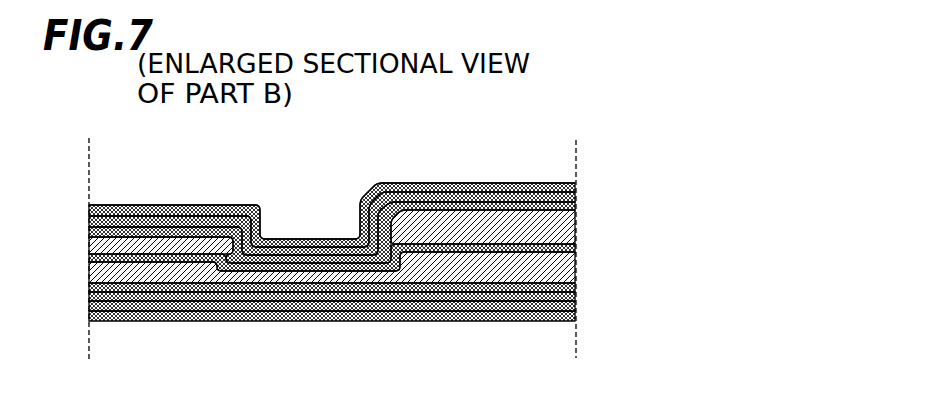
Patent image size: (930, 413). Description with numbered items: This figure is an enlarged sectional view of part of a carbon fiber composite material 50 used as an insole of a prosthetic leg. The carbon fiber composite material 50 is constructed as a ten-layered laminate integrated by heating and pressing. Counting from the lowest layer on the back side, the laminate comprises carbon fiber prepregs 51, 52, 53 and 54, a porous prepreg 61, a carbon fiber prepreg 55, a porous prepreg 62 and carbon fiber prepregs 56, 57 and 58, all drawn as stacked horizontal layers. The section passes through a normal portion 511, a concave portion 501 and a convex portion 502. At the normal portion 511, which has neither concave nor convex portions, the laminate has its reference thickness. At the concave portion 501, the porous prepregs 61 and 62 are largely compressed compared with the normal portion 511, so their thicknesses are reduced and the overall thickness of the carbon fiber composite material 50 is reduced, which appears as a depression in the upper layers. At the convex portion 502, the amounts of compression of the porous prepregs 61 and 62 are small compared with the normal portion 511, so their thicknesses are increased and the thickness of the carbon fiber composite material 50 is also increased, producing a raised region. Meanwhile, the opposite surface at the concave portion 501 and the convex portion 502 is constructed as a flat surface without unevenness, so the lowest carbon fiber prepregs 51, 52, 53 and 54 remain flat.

The carbon fiber composite material 50 is at (520, 137).
The carbon fiber prepreg 51 is at (575, 317).
The carbon fiber prepreg 52 is at (575, 309).
The carbon fiber prepreg 53 is at (575, 299).
The carbon fiber prepreg 54 is at (575, 290).
The carbon fiber prepreg 55 is at (575, 246).
The carbon fiber prepreg 56 is at (575, 207).
The carbon fiber prepreg 57 is at (575, 194).
The carbon fiber prepreg 58 is at (575, 183).
The porous prepreg 61 is at (575, 270).
The porous prepreg 62 is at (575, 228).
The concave portion 501 is at (305, 239).
The convex portion 502 is at (442, 186).
The normal portion 511 is at (170, 205).